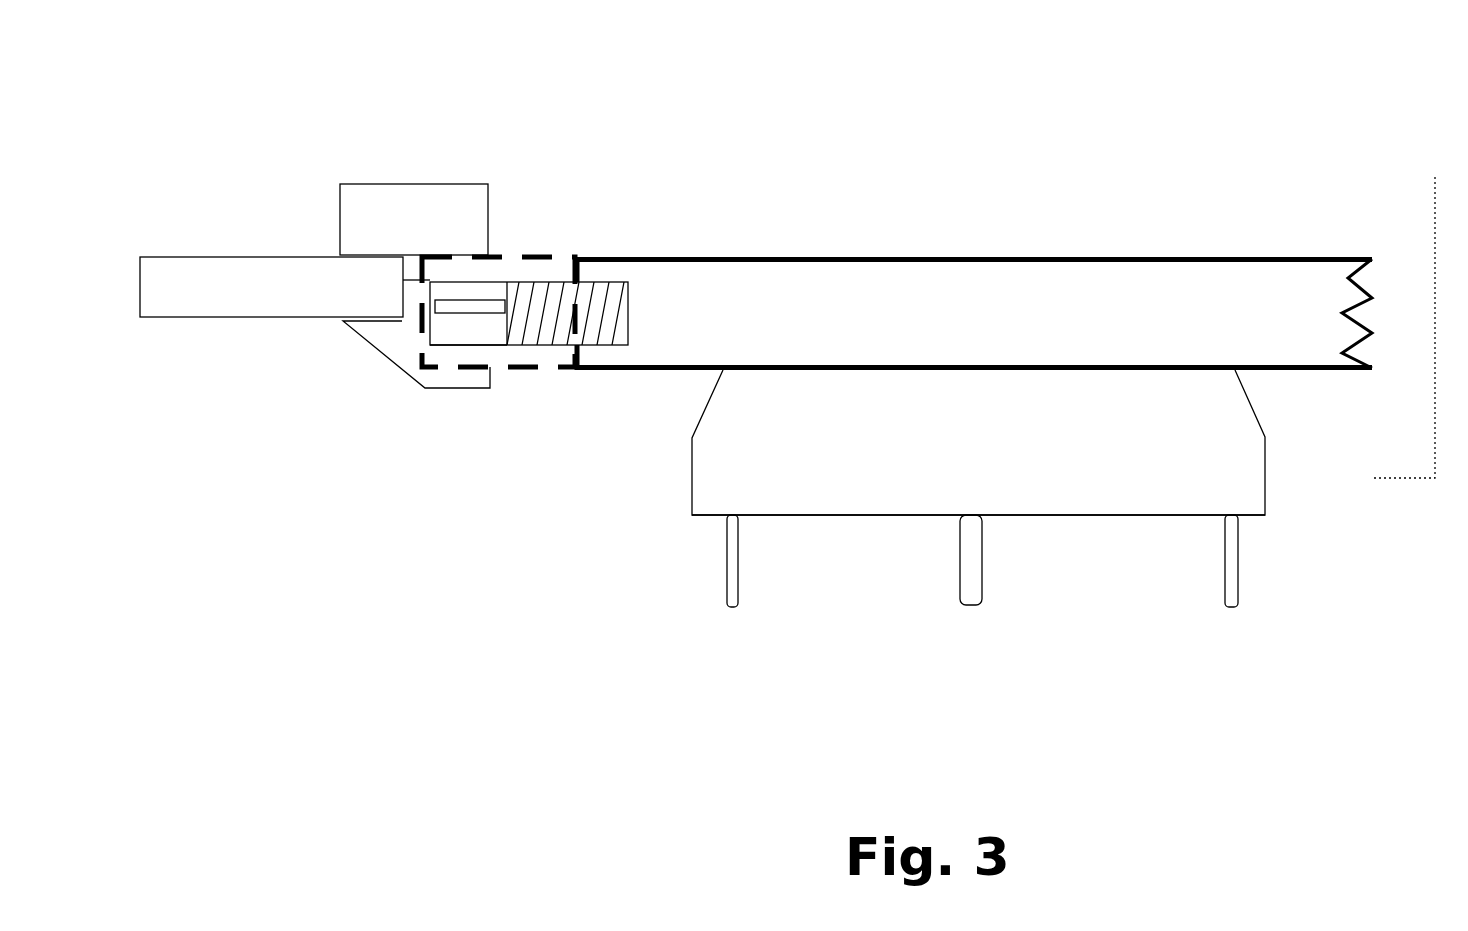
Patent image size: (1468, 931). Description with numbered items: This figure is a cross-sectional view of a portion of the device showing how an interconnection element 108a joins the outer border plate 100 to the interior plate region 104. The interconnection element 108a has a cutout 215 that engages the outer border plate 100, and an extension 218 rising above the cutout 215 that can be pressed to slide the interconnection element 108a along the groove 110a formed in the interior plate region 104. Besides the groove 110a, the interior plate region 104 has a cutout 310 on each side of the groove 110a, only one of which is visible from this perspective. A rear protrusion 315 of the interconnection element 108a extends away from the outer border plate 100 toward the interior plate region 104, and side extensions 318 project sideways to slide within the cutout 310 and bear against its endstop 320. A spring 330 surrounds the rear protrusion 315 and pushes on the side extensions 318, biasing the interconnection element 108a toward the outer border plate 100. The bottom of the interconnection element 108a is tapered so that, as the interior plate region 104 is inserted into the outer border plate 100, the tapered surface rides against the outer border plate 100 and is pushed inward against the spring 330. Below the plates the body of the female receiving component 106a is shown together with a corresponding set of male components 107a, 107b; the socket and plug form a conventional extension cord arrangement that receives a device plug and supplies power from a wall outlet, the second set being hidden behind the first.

The outer border plate 100 is at (227, 267).
The interior plate region 104 is at (927, 282).
The female receiving component 106a is at (838, 458).
The male component 107a is at (1250, 567).
The male component 107b is at (1231, 561).
The interconnection element 108a is at (353, 368).
The groove 110a is at (453, 303).
The cutout 215 is at (403, 280).
The extension 218 is at (420, 203).
The cutout 310 is at (615, 297).
The rear protrusion 315 is at (490, 347).
The side extension 318 is at (497, 257).
The endstop 320 is at (420, 322).
The spring 330 is at (594, 300).